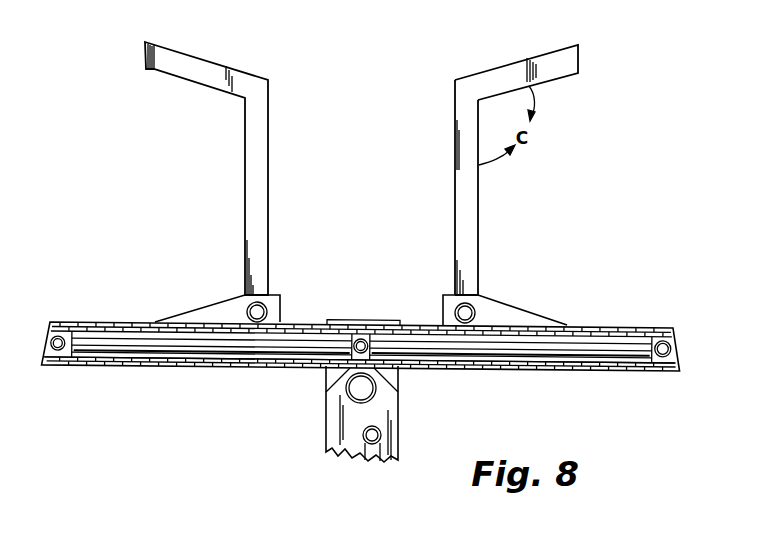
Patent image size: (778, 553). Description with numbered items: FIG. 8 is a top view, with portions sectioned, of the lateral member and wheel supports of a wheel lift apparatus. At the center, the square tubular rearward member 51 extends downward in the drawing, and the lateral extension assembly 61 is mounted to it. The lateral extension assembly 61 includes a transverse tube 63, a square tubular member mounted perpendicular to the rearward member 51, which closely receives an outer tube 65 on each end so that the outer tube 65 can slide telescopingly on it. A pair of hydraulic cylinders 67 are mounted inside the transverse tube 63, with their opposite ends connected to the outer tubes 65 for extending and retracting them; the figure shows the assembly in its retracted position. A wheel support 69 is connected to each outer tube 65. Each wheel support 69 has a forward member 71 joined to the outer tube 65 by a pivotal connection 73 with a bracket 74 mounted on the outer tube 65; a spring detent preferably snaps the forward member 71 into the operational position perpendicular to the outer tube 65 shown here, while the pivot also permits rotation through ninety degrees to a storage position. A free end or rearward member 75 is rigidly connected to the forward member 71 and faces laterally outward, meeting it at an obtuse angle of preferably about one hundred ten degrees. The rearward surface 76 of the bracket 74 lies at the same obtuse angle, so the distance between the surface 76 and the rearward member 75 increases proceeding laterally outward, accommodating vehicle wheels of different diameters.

The rearward member 51 is at (325, 429).
The lateral extension assembly 61 is at (562, 304).
The transverse tube 63 is at (394, 320).
The outer tube 65 is at (616, 368).
The hydraulic cylinders 67 is at (634, 322).
The wheel support 69 is at (482, 250).
The forward member 71 is at (479, 209).
The pivotal connection 73 is at (476, 311).
The bracket 74 is at (483, 318).
The rearward member 75 is at (518, 60).
The rearward surface 76 is at (530, 320).